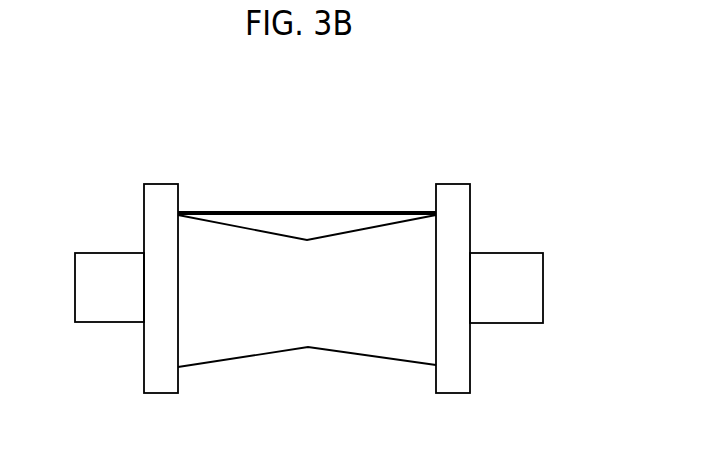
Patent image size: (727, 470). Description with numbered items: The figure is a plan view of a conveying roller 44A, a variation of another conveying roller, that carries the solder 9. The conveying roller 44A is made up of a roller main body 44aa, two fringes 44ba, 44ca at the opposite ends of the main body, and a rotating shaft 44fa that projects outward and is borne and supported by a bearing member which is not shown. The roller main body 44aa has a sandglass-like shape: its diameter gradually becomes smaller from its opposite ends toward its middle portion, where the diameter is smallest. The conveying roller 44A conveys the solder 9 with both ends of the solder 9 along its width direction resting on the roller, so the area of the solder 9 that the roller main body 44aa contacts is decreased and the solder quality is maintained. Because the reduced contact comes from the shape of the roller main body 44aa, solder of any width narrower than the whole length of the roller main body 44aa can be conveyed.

The conveying roller 44A is at (102, 189).
The solder 9 is at (357, 211).
The roller main body 44aa is at (318, 343).
The fringe 44ba is at (160, 393).
The fringe 44ca is at (452, 393).
The rotating shaft 44fa is at (543, 323).